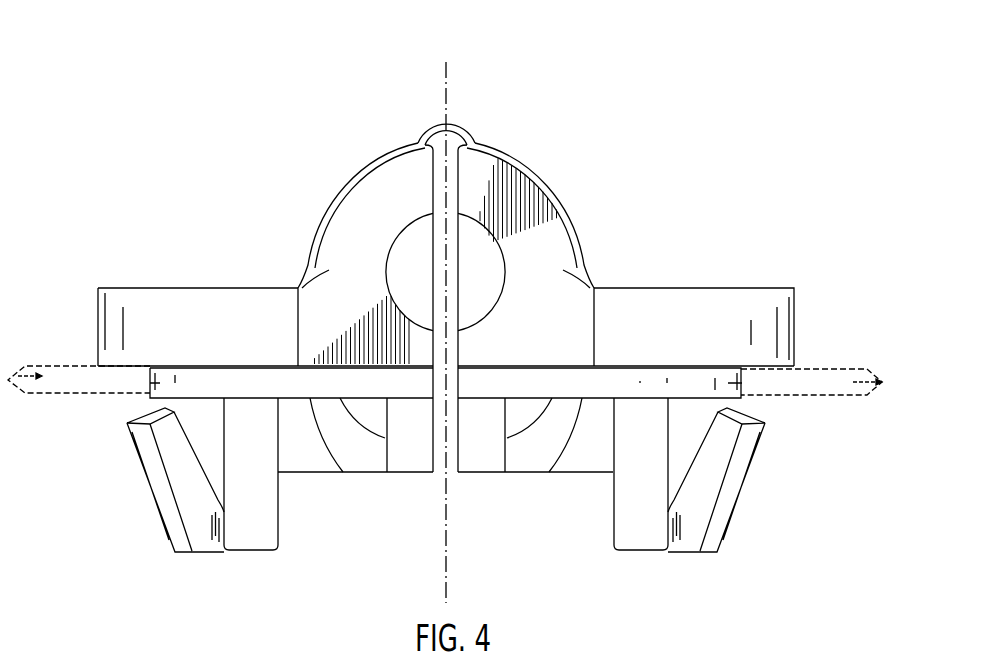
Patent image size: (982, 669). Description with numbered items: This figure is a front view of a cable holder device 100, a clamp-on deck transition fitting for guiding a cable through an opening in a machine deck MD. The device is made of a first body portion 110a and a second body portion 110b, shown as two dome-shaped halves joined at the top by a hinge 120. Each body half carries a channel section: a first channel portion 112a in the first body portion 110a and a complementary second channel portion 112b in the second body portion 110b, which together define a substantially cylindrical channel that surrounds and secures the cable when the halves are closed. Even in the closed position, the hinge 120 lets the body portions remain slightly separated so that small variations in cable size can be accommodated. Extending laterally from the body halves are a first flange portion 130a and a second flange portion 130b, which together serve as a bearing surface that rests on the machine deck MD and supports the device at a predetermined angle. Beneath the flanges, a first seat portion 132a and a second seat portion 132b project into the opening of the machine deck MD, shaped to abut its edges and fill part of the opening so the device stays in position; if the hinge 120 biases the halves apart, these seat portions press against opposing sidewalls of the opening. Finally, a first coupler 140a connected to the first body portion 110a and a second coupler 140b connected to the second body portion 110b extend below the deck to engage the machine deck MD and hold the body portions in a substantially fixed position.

The cable holder device 100 is at (445, 332).
The first body portion 110a is at (529, 168).
The second body portion 110b is at (366, 173).
The first channel portion 112a is at (500, 272).
The second channel portion 112b is at (392, 272).
The hinge 120 is at (441, 122).
The first flange portion 130a is at (783, 289).
The second flange portion 130b is at (121, 288).
The first seat portion 132a is at (728, 383).
The second seat portion 132b is at (150, 383).
The first coupler 140a is at (760, 545).
The second coupler 140b is at (144, 526).
The machine deck MD is at (830, 368).